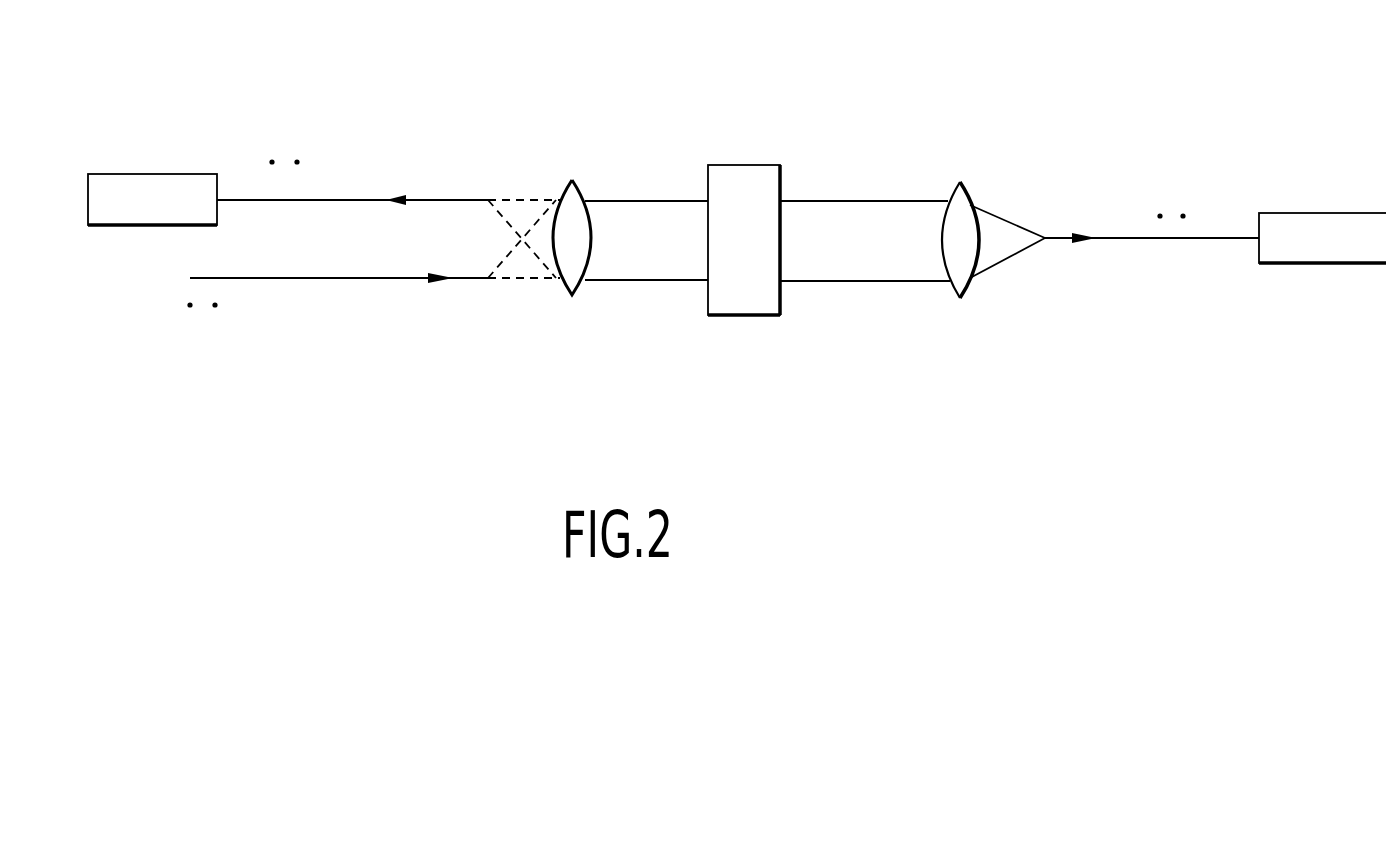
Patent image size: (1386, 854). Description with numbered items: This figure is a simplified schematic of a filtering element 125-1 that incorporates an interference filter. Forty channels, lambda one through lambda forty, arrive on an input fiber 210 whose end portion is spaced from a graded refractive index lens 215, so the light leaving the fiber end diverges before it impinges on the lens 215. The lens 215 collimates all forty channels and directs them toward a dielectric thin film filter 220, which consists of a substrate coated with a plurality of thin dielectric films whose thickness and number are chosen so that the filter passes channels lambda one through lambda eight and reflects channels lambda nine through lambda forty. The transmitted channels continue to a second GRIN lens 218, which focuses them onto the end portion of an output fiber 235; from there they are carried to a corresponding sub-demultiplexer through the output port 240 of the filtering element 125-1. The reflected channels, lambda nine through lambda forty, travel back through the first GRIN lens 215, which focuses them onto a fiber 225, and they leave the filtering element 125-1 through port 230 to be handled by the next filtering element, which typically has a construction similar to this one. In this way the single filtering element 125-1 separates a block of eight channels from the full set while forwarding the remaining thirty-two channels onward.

The filtering element 125-1 is at (718, 392).
The input fiber 210 is at (307, 278).
The graded refractive index (GRIN) lens 215 is at (574, 290).
The GRIN lens 218 is at (968, 199).
The dielectric thin film filter 220 is at (740, 165).
The fiber 225 is at (357, 198).
The port 230 is at (140, 174).
The output fiber 235 is at (1167, 238).
The output port 240 is at (1325, 213).